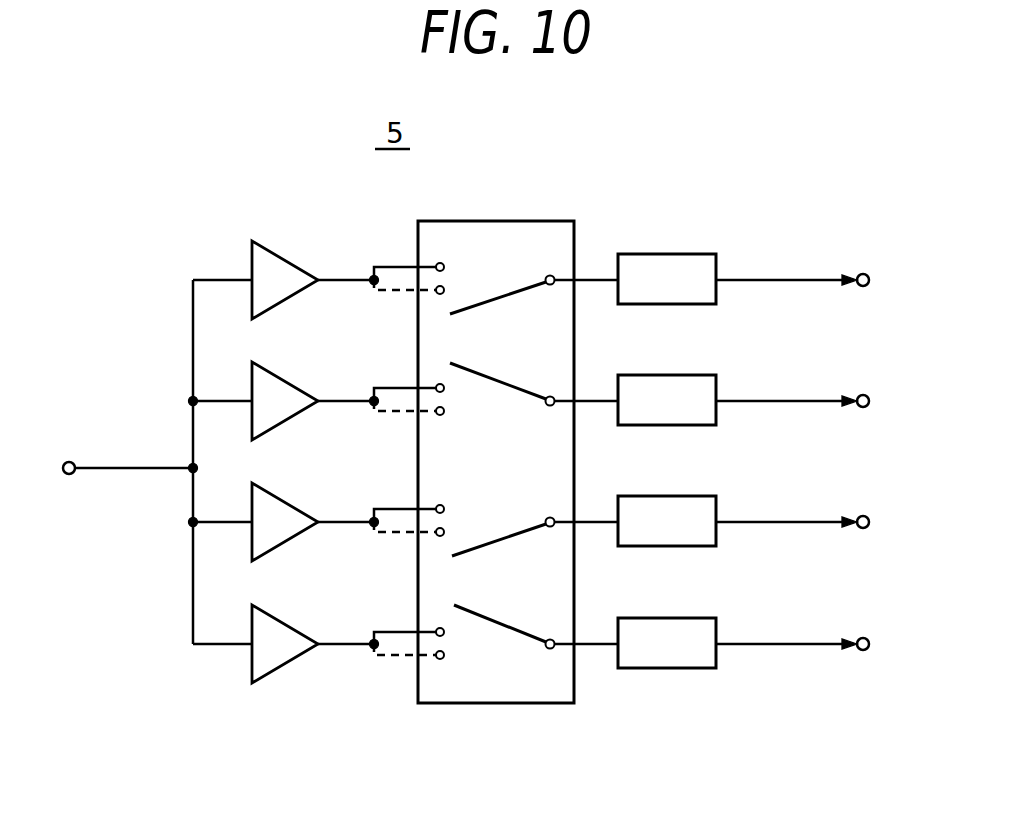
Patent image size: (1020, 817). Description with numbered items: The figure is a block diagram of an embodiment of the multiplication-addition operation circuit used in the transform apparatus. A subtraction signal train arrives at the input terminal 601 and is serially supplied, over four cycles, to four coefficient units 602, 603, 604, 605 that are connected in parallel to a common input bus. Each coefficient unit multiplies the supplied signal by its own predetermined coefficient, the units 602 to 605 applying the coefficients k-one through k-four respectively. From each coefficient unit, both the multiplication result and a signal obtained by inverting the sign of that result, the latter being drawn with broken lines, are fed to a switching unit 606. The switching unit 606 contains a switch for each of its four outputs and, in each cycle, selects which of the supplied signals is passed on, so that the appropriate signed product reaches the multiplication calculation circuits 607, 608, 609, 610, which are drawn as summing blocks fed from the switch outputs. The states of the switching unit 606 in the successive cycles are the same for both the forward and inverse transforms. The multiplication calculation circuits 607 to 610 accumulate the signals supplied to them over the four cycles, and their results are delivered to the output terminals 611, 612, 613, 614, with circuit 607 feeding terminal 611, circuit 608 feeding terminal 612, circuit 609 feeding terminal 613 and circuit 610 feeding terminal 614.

The terminal 601 is at (69, 462).
The coefficient unit 602 is at (287, 267).
The coefficient unit 603 is at (293, 391).
The coefficient unit 604 is at (294, 511).
The coefficient unit 605 is at (294, 636).
The switching unit 606 is at (543, 221).
The multiplication calculation circuit 607 is at (702, 254).
The multiplication calculation circuit 608 is at (706, 375).
The multiplication calculation circuit 609 is at (704, 496).
The multiplication calculation circuit 610 is at (704, 618).
The terminal 611 is at (867, 274).
The terminal 612 is at (867, 395).
The terminal 613 is at (867, 516).
The terminal 614 is at (867, 638).